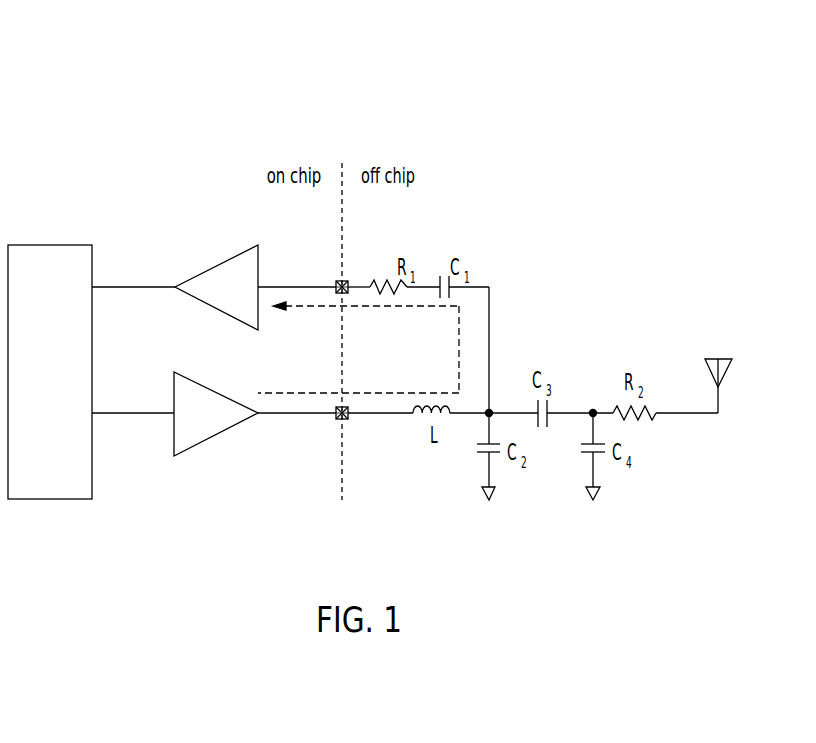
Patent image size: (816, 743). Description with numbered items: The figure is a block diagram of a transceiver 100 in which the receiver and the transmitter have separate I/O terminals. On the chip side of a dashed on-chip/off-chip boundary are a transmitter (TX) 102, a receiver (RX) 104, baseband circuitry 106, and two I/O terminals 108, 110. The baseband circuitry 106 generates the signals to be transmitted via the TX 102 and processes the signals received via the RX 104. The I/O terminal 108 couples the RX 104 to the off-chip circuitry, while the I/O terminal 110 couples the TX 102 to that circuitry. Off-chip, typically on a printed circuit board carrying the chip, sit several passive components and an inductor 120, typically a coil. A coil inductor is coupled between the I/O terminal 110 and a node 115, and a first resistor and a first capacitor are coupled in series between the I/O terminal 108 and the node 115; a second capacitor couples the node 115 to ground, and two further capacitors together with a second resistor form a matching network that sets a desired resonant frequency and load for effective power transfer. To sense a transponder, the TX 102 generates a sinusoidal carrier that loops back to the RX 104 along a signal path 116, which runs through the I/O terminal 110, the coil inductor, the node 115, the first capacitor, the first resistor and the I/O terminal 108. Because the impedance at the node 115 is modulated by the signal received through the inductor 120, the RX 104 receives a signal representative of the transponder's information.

The transceiver 100 is at (106, 90).
The transmitter (TX) 102 is at (199, 443).
The receiver (RX) 104 is at (197, 276).
The baseband circuitry 106 is at (44, 245).
The I/O terminal 108 is at (347, 278).
The I/O terminal 110 is at (344, 422).
The node 115 is at (491, 409).
The signal path 116 is at (457, 351).
The inductor 120 is at (724, 359).